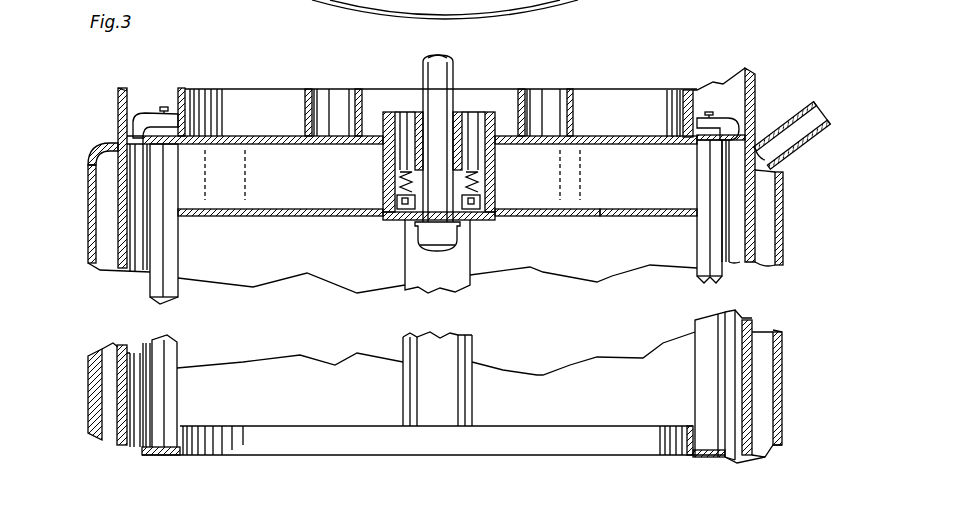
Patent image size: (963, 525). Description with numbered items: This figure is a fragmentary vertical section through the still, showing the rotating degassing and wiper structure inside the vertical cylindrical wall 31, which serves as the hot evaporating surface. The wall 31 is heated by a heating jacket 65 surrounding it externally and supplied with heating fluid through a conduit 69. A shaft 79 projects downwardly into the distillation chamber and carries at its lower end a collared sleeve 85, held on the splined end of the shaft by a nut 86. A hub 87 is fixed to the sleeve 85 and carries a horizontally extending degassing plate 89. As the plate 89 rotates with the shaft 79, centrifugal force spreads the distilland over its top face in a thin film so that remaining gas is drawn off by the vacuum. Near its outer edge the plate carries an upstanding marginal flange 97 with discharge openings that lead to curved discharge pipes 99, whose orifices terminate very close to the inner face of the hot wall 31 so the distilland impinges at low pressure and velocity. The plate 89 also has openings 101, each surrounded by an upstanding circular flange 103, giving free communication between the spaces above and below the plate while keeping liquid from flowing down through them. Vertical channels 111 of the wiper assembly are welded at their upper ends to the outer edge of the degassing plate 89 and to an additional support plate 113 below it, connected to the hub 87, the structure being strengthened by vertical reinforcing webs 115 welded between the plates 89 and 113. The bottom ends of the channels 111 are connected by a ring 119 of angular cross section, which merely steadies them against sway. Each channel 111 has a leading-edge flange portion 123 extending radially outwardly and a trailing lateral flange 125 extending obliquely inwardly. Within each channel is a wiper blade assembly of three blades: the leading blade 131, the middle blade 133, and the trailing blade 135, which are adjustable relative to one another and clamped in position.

The vertical cylindrical wall 31 is at (751, 222).
The heating jacket 65 is at (783, 240).
The conduit 69 is at (790, 122).
The shaft 79 is at (457, 70).
The collared sleeve 85 is at (465, 112).
The nut 86 is at (420, 238).
The hub 87 is at (497, 189).
The degassing plate 89 is at (634, 146).
The marginal flange 97 is at (655, 90).
The discharge pipe 99 is at (141, 113).
The opening 101 is at (337, 97).
The circular flange 103 is at (363, 100).
The vertical channel 111 is at (170, 253).
The support plate 113 is at (609, 214).
The reinforcing web 115 is at (556, 200).
The ring 119 is at (688, 440).
The leading edge flange portion 123 is at (723, 362).
The lateral flange 125 is at (175, 287).
The leading blade 131 is at (733, 267).
The middle blade 133 is at (128, 207).
The trailing blade 135 is at (138, 270).